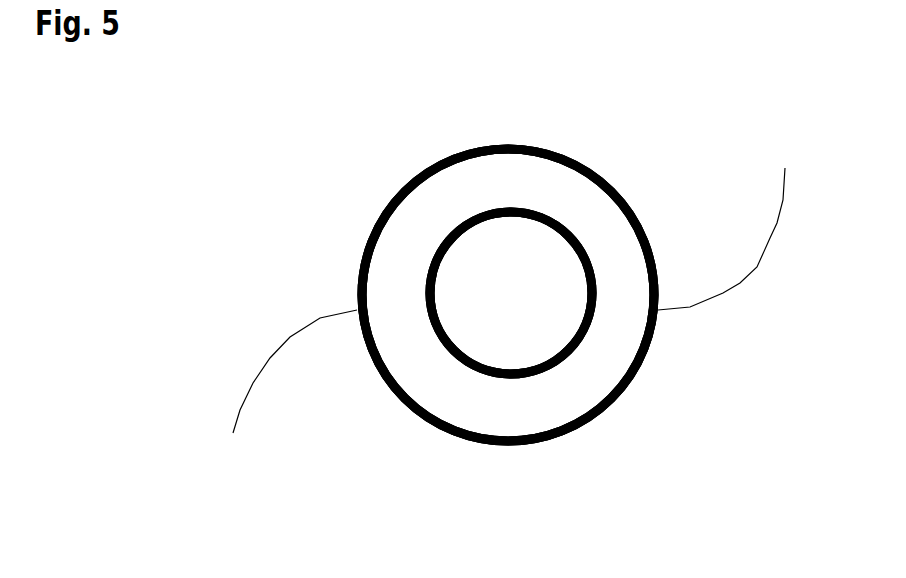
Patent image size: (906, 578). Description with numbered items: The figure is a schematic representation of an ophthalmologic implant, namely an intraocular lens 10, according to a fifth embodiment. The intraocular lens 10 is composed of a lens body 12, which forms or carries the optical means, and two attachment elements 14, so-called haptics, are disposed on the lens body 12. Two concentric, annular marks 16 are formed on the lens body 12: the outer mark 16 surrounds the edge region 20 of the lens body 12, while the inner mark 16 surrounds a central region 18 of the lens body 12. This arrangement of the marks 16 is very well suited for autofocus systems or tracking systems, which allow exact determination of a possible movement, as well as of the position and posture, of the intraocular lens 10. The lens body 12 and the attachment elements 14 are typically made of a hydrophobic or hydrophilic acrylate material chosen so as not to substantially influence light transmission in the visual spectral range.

The intraocular lens 10 is at (262, 168).
The lens body 12 is at (567, 322).
The attachment elements 14 is at (770, 238).
The annular marks 16 is at (553, 369).
The central region 18 is at (511, 293).
The edge region 20 is at (357, 265).